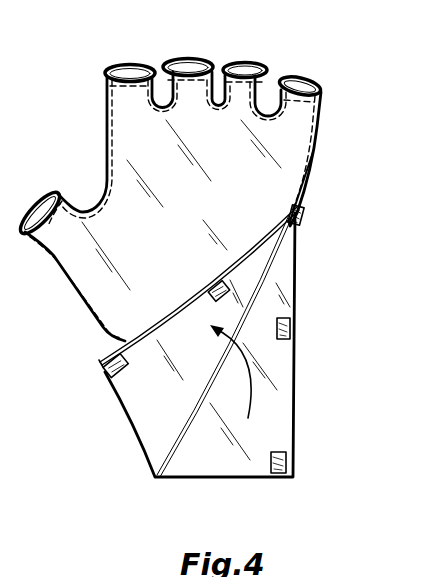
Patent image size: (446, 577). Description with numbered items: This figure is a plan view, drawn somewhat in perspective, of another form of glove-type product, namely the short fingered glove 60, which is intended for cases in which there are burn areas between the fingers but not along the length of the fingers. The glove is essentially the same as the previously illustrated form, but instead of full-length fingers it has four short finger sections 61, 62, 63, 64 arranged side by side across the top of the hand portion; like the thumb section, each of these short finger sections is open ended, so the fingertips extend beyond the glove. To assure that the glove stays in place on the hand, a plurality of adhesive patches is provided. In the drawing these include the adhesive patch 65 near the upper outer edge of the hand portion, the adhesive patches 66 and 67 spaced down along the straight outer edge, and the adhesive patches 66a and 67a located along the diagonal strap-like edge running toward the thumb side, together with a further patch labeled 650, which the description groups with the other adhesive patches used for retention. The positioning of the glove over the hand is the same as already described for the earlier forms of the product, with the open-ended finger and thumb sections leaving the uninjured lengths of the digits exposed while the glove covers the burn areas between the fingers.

The short fingered glove 60 is at (97, 156).
The short finger section 61 is at (128, 47).
The short finger section 62 is at (180, 58).
The short finger section 63 is at (255, 41).
The short finger section 64 is at (285, 78).
The adhesive patch 65 is at (301, 213).
The strap 650 is at (283, 212).
The adhesive patch 66a is at (209, 285).
The adhesive patch 66 is at (291, 327).
The adhesive patch 67 is at (288, 460).
The adhesive patch 67a is at (107, 371).